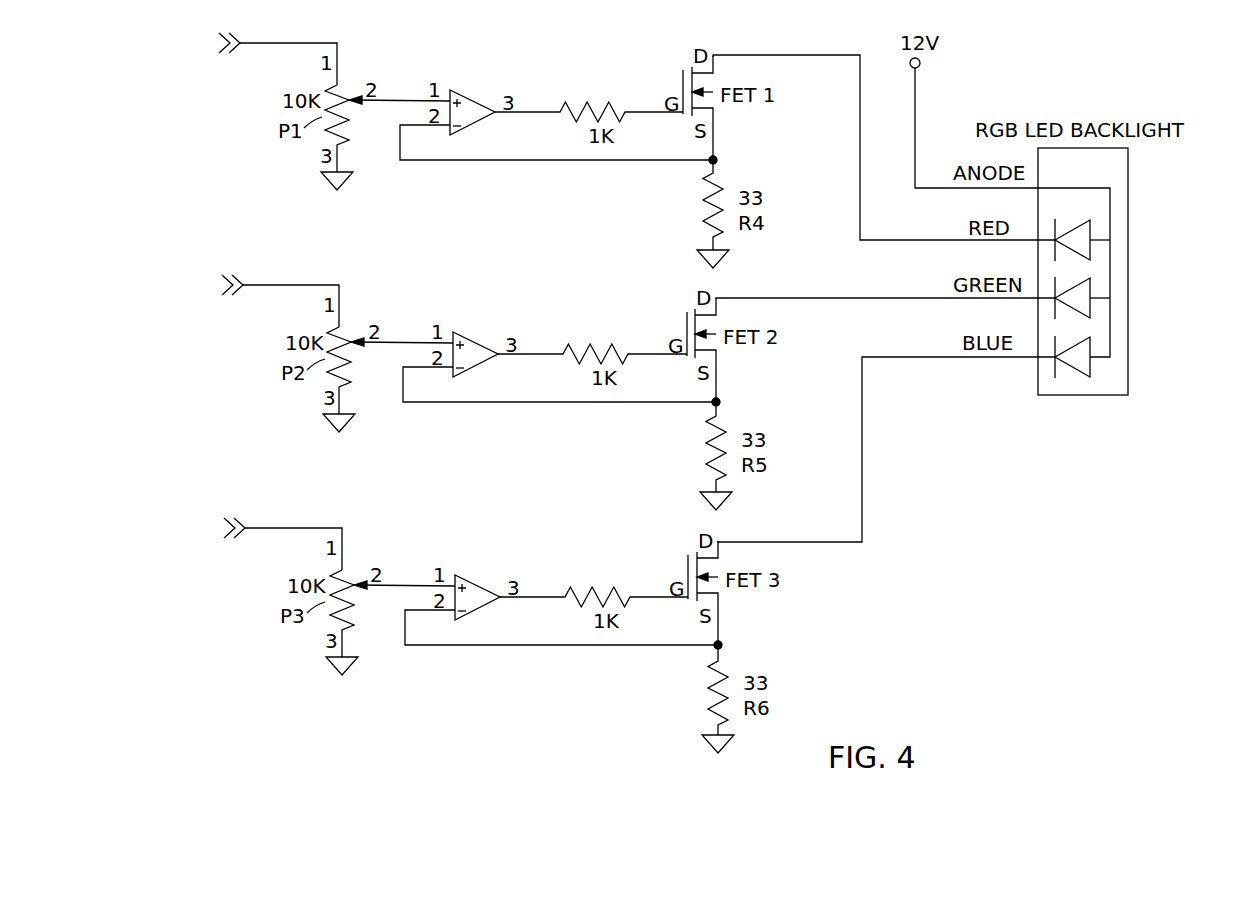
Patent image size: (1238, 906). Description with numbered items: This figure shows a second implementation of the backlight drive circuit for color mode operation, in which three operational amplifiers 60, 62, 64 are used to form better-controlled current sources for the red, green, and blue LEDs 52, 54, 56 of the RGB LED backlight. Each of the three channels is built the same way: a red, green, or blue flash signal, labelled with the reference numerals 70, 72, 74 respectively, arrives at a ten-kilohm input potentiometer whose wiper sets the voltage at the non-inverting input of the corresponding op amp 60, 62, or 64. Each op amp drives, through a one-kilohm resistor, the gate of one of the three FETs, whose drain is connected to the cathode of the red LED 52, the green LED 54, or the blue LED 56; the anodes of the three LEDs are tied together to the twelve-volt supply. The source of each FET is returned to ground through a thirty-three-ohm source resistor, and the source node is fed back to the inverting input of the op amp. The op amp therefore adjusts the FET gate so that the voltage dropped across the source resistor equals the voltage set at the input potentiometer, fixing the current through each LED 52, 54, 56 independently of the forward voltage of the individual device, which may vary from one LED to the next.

The red flash signal input 70 is at (180, 58).
The green flash signal input 72 is at (160, 312).
The blue flash signal input 74 is at (171, 555).
The operational amplifier 60 is at (470, 125).
The operational amplifier 62 is at (473, 347).
The operational amplifier 64 is at (475, 590).
The LED 52 is at (1092, 232).
The LED 54 is at (1092, 291).
The LED 56 is at (1092, 349).